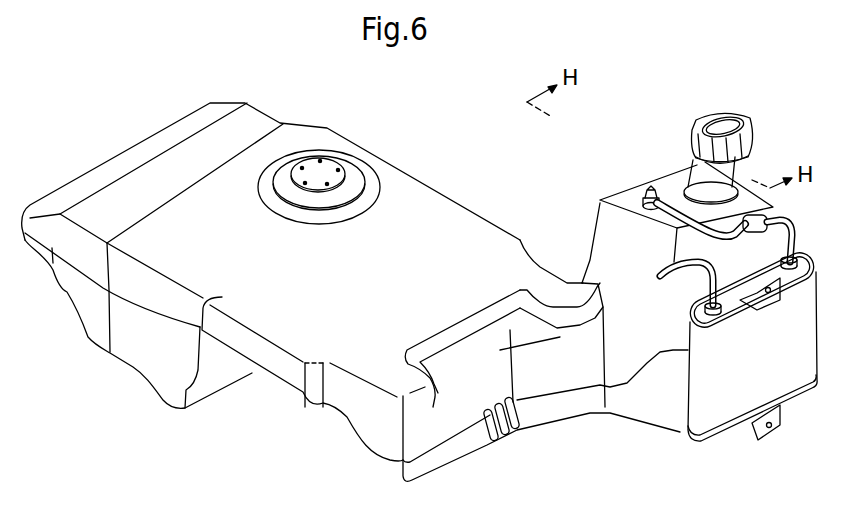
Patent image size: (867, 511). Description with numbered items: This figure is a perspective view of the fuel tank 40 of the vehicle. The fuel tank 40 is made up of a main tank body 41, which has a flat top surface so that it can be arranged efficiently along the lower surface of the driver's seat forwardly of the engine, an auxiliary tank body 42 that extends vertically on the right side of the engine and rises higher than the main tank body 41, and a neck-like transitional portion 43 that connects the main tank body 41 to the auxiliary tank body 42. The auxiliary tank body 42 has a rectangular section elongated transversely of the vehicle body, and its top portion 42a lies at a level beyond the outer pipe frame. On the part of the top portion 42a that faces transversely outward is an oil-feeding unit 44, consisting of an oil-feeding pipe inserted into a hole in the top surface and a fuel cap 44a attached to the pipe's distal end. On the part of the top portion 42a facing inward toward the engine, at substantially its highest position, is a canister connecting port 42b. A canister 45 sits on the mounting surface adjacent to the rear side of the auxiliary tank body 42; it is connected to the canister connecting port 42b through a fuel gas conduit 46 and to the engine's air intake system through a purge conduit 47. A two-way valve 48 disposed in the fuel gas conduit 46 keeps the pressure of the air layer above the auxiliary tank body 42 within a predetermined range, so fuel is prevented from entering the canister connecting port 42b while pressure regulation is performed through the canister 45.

The fuel tank 40 is at (134, 379).
The main tank body 41 is at (404, 185).
The auxiliary tank body 42 is at (652, 204).
The top portion 42a is at (675, 193).
The canister connecting port 42b is at (643, 193).
The neck-like transitional portion 43 is at (583, 357).
The oil-feeding unit 44 is at (697, 103).
The fuel cap 44a is at (725, 125).
The canister 45 is at (713, 395).
The fuel gas conduit 46 is at (700, 240).
The purge conduit 47 is at (682, 285).
The two-way valve 48 is at (773, 258).